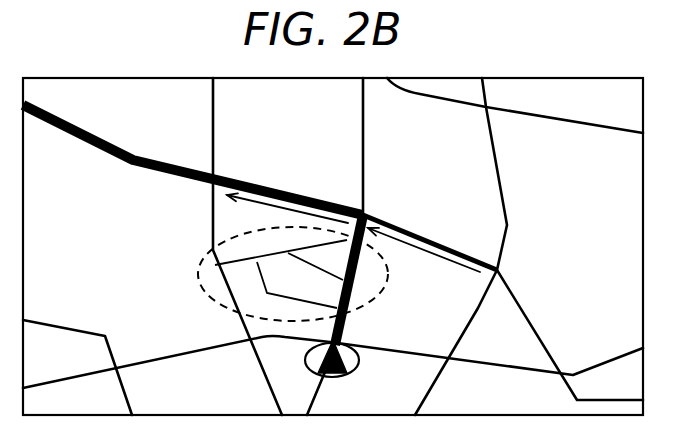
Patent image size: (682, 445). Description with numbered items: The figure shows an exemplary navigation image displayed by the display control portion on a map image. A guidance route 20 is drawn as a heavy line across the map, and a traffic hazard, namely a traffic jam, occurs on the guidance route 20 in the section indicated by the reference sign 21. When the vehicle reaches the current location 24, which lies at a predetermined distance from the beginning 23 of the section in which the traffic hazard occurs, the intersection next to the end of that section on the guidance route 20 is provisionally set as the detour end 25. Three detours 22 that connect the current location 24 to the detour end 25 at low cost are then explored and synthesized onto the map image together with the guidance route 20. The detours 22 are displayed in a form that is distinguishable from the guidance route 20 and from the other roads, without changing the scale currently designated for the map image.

The guidance route 20 is at (92, 134).
The traffic hazard section 21 is at (306, 211).
The detours 22 is at (200, 272).
The beginning of the section 23 is at (368, 213).
The current location 24 is at (359, 364).
The detour end 25 is at (215, 172).